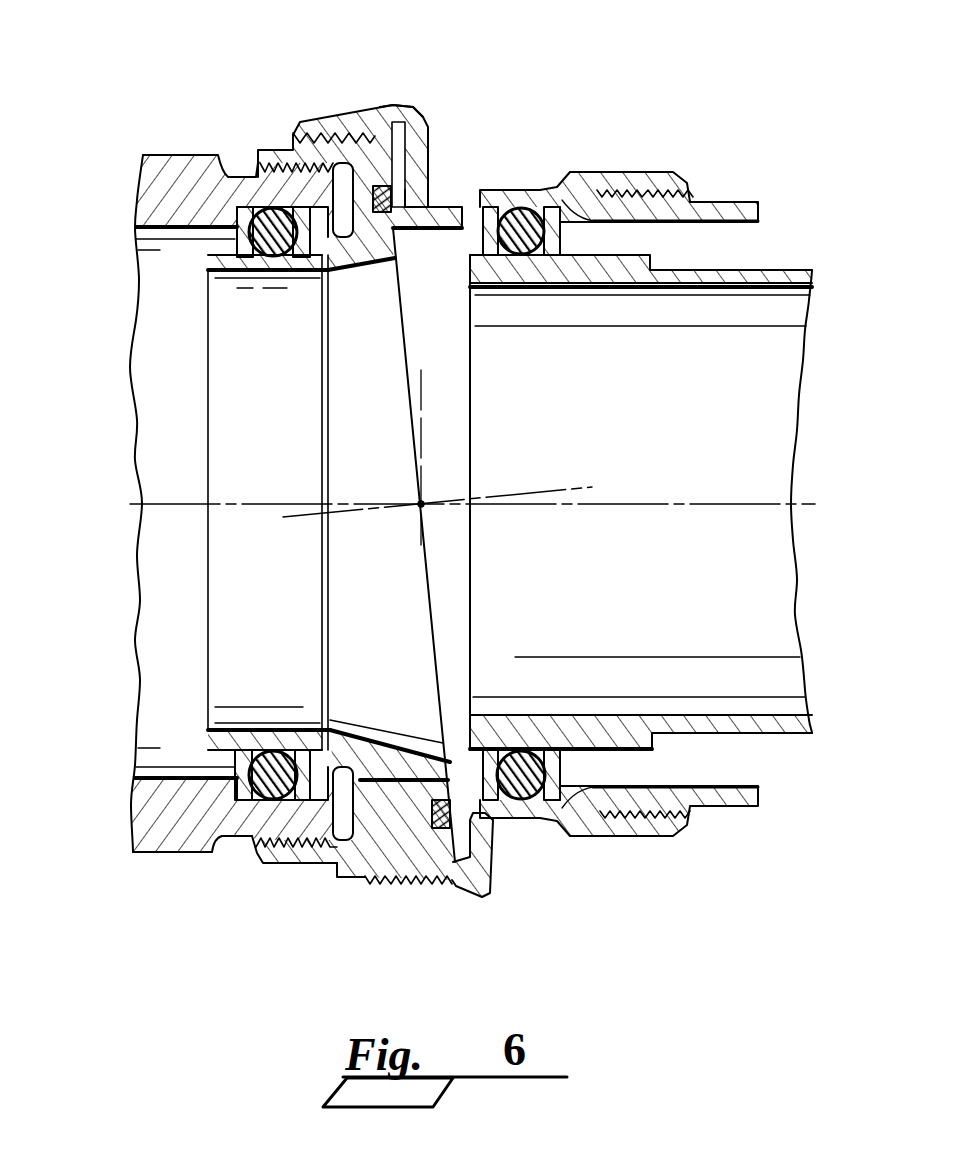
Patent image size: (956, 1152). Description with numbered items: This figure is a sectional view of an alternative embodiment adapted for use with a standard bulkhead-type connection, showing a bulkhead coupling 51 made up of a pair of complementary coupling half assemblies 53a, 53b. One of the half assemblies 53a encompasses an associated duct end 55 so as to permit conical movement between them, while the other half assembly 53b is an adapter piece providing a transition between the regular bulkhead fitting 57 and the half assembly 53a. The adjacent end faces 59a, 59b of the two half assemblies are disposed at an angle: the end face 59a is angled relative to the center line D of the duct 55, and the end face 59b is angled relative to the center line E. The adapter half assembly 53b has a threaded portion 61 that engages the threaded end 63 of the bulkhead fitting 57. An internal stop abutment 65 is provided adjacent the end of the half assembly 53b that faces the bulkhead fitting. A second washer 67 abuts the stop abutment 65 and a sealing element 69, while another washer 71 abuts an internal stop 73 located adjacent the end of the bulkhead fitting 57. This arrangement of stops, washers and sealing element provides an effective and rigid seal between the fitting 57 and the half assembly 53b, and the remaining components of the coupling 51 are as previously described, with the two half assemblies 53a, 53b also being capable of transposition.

The bulkhead coupling 51 is at (448, 118).
The coupling half assembly 53a is at (615, 178).
The coupling half assembly 53b is at (265, 148).
The duct end 55 is at (792, 272).
The bulkhead fitting 57 is at (171, 153).
The end face 59a is at (402, 103).
The end face 59b is at (415, 197).
The threaded portion 61 is at (288, 848).
The threaded end 63 is at (255, 838).
The internal stop abutment 65 is at (330, 737).
The second washer 67 is at (310, 780).
The sealing element 69 is at (272, 760).
The second washer 71 is at (230, 763).
The internal stop 73 is at (173, 852).
The center line D is at (687, 503).
The center line E is at (295, 503).